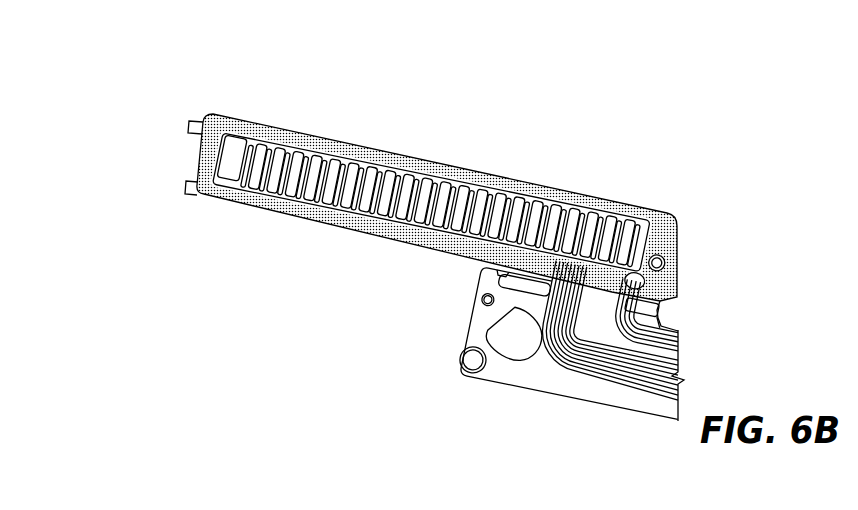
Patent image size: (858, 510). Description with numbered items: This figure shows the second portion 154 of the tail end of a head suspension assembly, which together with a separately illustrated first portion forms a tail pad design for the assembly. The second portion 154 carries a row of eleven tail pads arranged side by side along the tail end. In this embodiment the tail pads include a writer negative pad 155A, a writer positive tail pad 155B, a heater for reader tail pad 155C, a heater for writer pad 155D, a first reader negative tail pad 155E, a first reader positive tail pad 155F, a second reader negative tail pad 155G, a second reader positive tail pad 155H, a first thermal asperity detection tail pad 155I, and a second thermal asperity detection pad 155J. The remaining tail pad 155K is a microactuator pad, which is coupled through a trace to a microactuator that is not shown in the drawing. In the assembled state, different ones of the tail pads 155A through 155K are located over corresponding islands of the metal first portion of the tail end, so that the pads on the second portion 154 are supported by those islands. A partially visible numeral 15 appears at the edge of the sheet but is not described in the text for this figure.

The second portion 154 is at (317, 262).
The writer negative pad 155A is at (260, 154).
The writer positive tail pad 155B is at (297, 162).
The heater for reader tail pad 155C is at (332, 168).
The heater for writer pad 155D is at (368, 175).
The first reader negative tail pad 155E is at (407, 180).
The first reader positive tail pad 155F is at (443, 190).
The second reader negative tail pad 155G is at (478, 193).
The second reader positive tail pad 155H is at (515, 205).
The first thermal asperity detection tail pad 155I is at (552, 208).
The second thermal asperity detection pad 155J is at (588, 222).
The microactuator pad 155K is at (625, 233).
The device (partial numeral) 15 is at (850, 71).